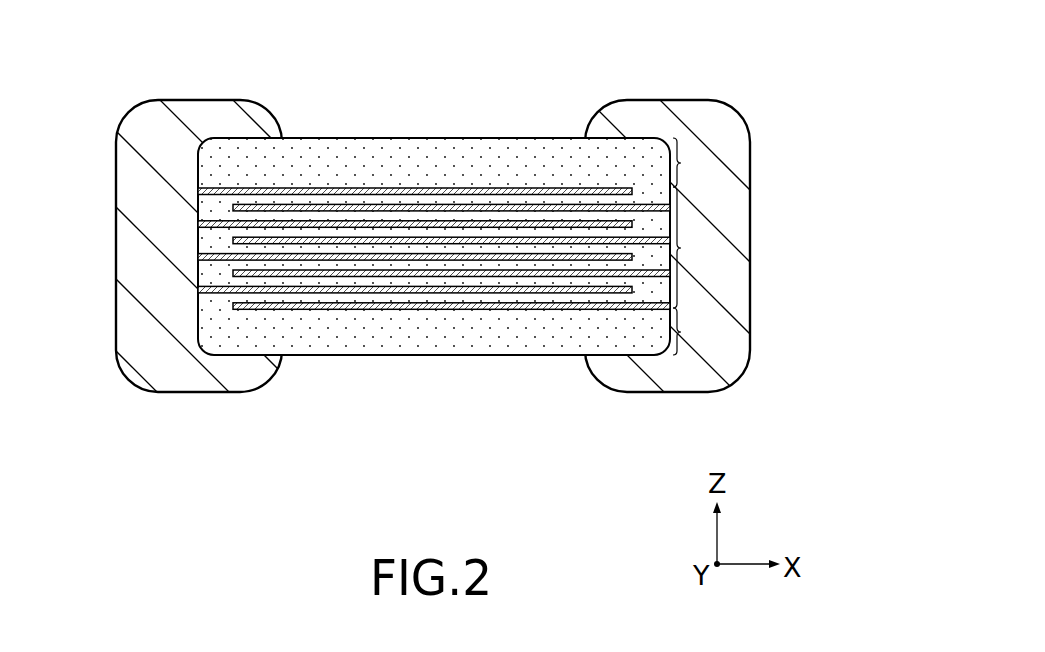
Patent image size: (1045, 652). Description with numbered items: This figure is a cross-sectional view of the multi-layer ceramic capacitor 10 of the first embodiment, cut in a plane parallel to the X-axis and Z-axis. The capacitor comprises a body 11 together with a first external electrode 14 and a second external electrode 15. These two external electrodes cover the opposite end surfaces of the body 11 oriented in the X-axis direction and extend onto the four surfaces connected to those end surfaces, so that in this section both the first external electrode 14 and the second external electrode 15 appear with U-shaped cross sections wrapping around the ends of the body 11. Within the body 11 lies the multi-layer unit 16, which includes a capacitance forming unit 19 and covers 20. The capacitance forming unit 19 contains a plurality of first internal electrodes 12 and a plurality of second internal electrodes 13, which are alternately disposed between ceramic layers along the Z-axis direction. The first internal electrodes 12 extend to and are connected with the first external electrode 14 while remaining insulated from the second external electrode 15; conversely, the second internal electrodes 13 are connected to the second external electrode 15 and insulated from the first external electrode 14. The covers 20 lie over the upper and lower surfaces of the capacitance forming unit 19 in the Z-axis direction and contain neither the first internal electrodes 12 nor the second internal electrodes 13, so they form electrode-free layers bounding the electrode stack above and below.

The multi-layer ceramic capacitor 10 is at (490, 216).
The body 11 is at (458, 233).
The first internal electrodes 12 is at (307, 287).
The second internal electrodes 13 is at (505, 303).
The first external electrode 14 is at (132, 137).
The second external electrode 15 is at (747, 191).
The multi-layer unit 16 is at (410, 340).
The capacitance forming unit 19 is at (458, 190).
The covers 20 is at (695, 246).